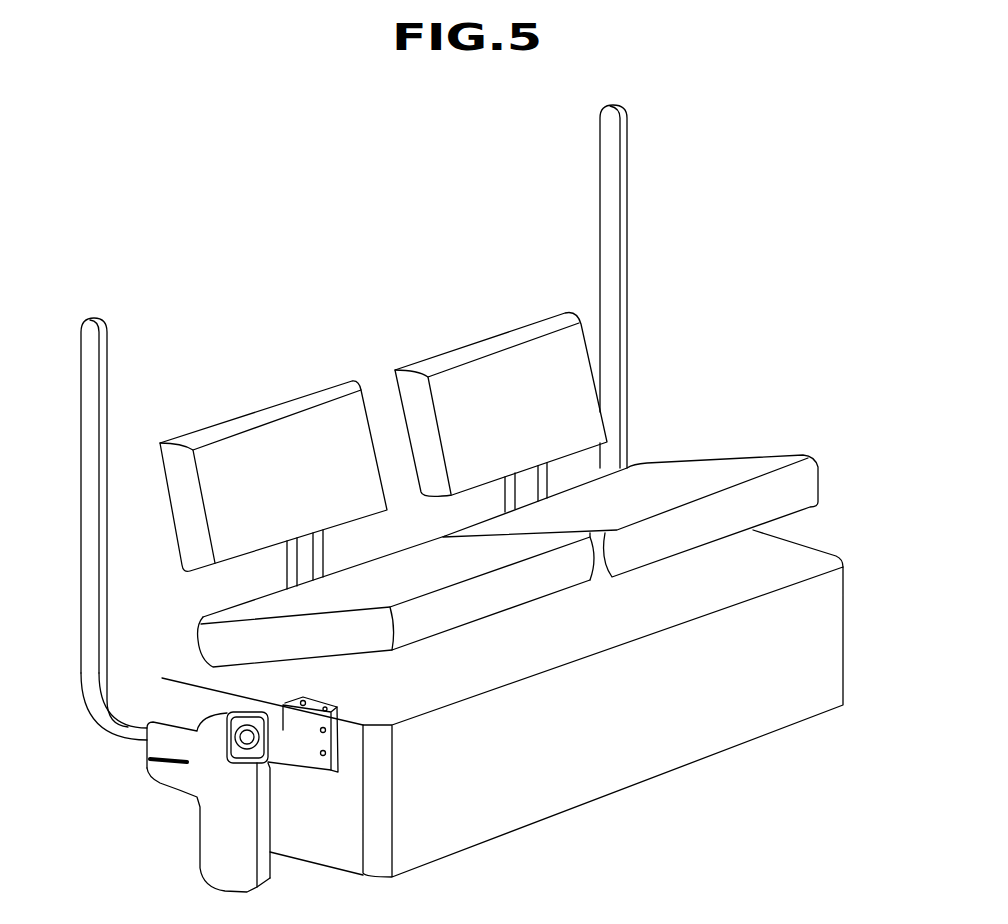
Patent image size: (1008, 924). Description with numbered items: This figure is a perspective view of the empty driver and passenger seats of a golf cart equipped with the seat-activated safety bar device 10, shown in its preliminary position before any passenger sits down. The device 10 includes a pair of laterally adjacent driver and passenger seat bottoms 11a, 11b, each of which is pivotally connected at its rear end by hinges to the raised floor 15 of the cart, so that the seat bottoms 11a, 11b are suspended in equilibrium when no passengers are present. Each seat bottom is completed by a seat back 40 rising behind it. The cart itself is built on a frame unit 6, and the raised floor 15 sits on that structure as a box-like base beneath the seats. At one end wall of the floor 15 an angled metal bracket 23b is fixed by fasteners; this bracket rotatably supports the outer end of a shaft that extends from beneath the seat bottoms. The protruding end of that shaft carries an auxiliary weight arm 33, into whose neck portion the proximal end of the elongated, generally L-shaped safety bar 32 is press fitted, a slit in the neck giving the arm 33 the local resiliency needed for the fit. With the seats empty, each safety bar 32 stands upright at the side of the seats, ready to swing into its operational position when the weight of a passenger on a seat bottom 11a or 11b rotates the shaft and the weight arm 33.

The safety bar device 10 is at (383, 308).
The safety bar 32 is at (103, 372).
The seat back 40 is at (315, 398).
The seat bottom 11a is at (728, 468).
The seat bottom 11b is at (418, 578).
The raised floor 15 is at (715, 582).
The frame unit 6 is at (333, 847).
The metal bracket 23b is at (337, 730).
The auxiliary weight arm 33 is at (233, 817).